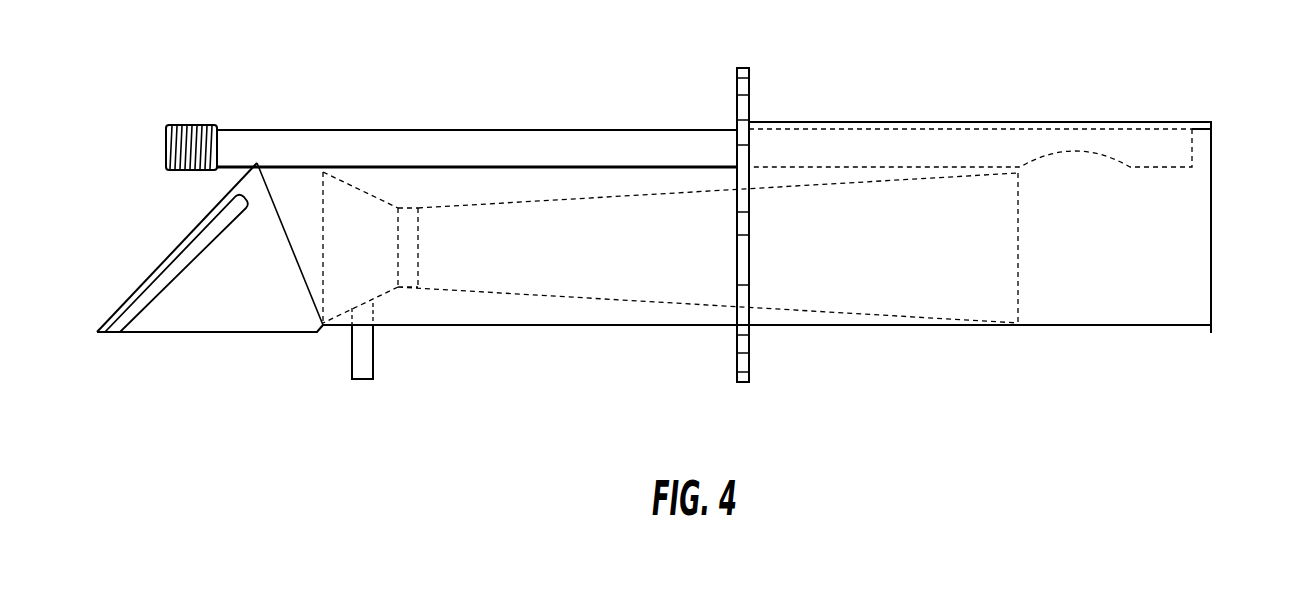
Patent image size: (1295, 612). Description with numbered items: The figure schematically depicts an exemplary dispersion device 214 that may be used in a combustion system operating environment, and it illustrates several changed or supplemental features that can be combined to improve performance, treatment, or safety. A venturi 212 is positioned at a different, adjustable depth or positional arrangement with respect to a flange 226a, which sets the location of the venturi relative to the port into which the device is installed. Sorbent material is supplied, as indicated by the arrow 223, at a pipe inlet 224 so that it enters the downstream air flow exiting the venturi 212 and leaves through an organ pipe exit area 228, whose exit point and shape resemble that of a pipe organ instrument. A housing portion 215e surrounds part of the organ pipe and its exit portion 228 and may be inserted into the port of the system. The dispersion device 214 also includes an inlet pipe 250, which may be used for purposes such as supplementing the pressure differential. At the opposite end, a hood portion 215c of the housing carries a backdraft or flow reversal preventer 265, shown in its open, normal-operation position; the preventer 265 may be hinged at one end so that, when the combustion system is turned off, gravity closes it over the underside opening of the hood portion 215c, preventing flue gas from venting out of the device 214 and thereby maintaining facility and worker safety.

The venturi 212 is at (440, 205).
The dispersion device 214 is at (633, 43).
The hood portion 215c is at (143, 275).
The housing portion 215e is at (1000, 122).
The arrow 223 is at (160, 124).
The pipe inlet 224 is at (184, 125).
The flange 226a is at (750, 68).
The organ pipe exit area 228 is at (1177, 217).
The inlet pipe 250 is at (373, 380).
The backdraft preventer 265 is at (200, 255).